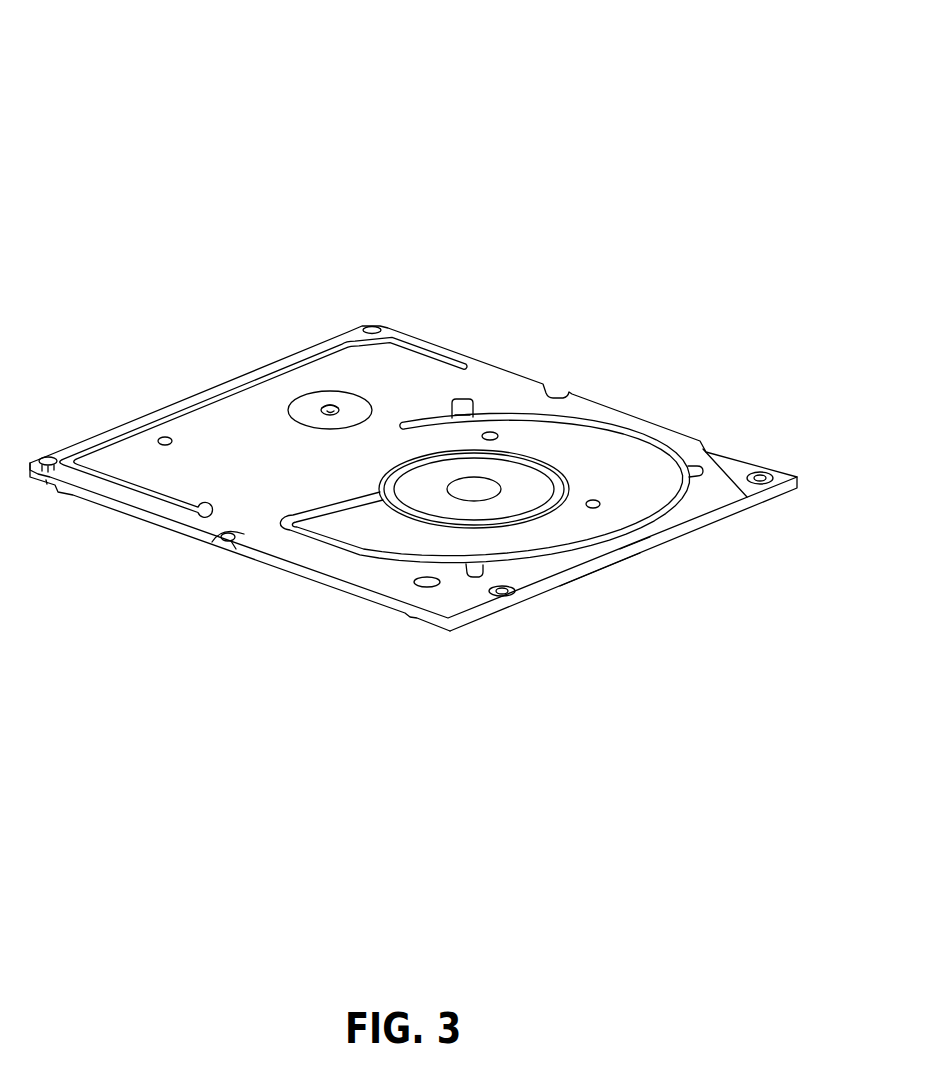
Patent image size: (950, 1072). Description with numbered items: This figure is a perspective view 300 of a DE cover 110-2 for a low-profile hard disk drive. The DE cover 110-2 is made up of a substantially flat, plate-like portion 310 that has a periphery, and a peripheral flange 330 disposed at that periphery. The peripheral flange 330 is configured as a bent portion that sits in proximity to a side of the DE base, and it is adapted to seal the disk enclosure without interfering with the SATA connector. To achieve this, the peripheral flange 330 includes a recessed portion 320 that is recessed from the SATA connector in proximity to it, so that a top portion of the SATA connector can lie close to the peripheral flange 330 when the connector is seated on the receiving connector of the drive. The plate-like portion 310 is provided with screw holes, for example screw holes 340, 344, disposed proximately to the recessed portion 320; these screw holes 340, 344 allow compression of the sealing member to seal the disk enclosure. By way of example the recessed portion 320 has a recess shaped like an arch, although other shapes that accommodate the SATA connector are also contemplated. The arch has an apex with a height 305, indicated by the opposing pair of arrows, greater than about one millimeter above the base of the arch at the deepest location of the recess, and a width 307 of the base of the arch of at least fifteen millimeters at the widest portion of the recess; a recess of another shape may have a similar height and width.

The perspective view 300 is at (160, 136).
The DE cover 110-2 is at (341, 311).
The plate-like portion 310 is at (503, 389).
The recessed portion 320 is at (597, 591).
The peripheral flange 330 is at (483, 618).
The screw hole 340 is at (503, 587).
The screw hole 344 is at (760, 473).
The height 305 is at (630, 528).
The width 307 is at (612, 573).